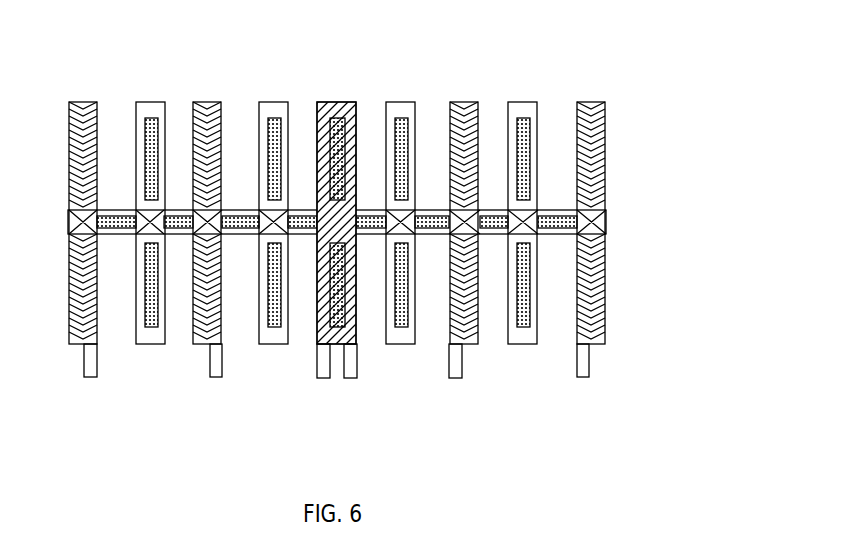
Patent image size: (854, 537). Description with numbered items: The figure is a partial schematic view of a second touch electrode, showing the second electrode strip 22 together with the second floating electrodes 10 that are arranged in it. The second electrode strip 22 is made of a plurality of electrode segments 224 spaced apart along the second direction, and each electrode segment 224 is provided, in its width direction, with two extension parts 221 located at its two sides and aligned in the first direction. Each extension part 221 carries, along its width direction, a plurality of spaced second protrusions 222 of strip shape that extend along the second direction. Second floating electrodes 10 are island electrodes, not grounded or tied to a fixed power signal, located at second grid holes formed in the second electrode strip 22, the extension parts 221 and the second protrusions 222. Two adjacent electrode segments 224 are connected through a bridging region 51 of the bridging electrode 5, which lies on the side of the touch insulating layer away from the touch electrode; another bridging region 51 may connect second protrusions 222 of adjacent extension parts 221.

The second floating electrode 10 is at (122, 218).
The second protrusion 222 is at (205, 117).
The extension part 221 is at (587, 218).
The electrode segment 224 is at (353, 315).
The second electrode strip 22 is at (394, 286).
The bridging region 51 is at (585, 357).
The bridging electrode 5 is at (422, 394).